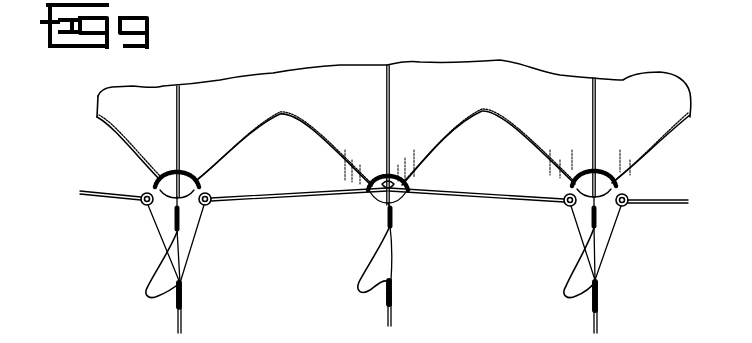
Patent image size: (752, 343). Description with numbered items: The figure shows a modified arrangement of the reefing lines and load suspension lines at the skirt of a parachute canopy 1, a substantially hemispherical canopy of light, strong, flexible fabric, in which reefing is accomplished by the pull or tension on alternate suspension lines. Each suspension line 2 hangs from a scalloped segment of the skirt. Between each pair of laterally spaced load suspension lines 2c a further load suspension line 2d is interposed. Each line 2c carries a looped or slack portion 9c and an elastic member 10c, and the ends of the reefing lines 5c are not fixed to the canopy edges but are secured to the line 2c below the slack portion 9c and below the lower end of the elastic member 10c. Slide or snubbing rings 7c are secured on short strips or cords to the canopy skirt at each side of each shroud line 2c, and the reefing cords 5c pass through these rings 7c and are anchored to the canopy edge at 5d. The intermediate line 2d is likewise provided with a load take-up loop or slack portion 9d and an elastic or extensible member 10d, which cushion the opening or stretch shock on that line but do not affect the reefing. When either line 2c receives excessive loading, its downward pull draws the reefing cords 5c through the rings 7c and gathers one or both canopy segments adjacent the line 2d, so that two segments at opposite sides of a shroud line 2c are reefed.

The parachute canopy 1 is at (338, 137).
The suspension line 2 is at (182, 112).
The load suspension line 2c is at (183, 319).
The load suspension line 2d is at (393, 314).
The reefing line 5c is at (192, 267).
The anchor point of reefing cord 5d is at (395, 183).
The slide or snubbing ring 7c is at (142, 193).
The looped or slack portion 9c is at (143, 293).
The load take-up loop or slack portion 9d is at (357, 284).
The elastic member 10c is at (183, 238).
The elastic or extensible member 10d is at (393, 247).